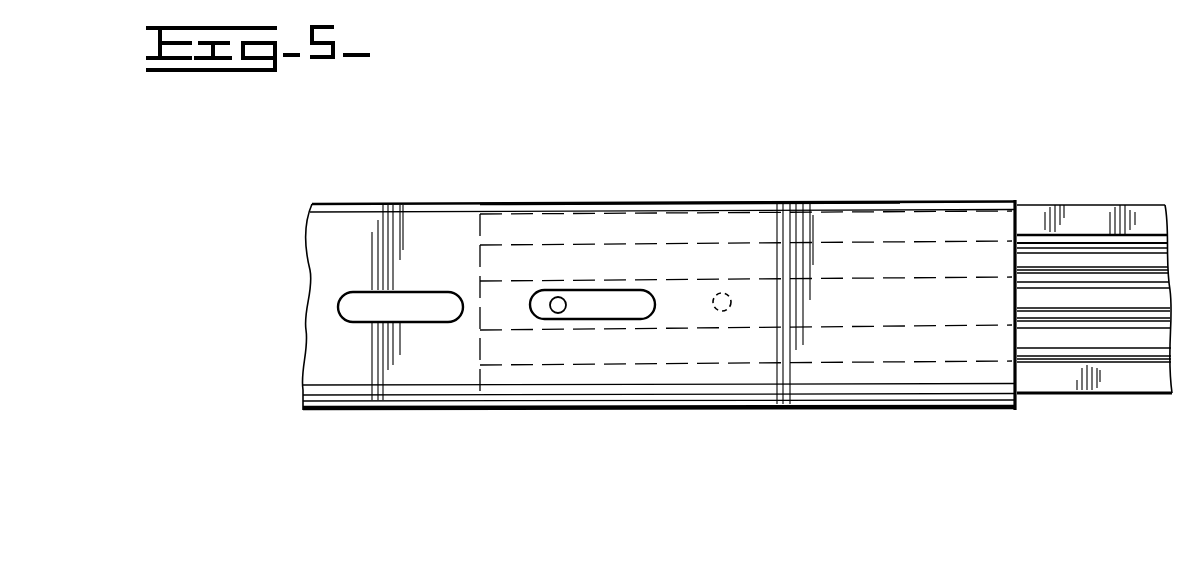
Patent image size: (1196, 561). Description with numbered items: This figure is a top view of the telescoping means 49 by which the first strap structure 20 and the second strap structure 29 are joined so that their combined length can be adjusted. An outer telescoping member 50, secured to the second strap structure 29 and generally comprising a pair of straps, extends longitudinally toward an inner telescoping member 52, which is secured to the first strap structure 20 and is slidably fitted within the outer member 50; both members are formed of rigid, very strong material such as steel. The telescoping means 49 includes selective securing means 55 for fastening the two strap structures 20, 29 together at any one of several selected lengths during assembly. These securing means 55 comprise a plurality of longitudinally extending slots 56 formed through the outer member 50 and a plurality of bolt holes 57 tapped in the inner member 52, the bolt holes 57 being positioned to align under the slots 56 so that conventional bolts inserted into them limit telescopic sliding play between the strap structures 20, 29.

The first strap structure 20 is at (1126, 206).
The second strap structure 29 is at (666, 200).
The telescoping means 49 is at (1019, 170).
The outer telescoping member 50 is at (887, 216).
The inner telescoping member 52 is at (1042, 380).
The selective securing means 55 is at (575, 326).
The longitudinally extending slots 56 is at (438, 313).
The bolt holes 57 is at (564, 300).